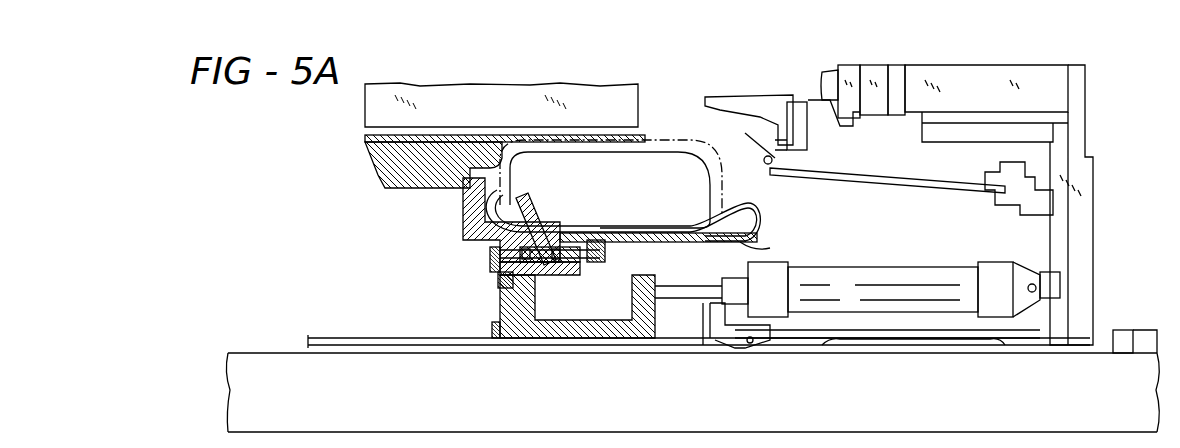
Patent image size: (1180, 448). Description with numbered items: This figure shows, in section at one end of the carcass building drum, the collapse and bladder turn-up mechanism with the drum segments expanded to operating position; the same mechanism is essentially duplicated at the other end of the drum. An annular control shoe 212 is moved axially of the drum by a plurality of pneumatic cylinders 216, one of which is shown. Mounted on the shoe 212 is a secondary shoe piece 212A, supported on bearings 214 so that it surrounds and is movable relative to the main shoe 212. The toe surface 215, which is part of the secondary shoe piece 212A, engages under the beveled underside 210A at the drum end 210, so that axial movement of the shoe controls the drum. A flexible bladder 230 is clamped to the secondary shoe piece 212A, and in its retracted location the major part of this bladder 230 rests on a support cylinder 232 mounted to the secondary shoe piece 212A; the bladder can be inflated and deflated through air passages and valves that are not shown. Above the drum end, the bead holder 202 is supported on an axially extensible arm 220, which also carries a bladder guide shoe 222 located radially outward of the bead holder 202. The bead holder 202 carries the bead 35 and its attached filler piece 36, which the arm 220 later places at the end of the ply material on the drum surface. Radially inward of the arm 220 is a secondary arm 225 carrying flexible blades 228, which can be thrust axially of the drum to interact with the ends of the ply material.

The bead holder ring 202 is at (1050, 215).
The drum end 210 is at (385, 175).
The beveled underside 210A is at (462, 190).
The annular control shoe 212 is at (505, 322).
The secondary shoe piece 212A is at (490, 268).
The bearings 214 is at (600, 265).
The toe surface 215 is at (470, 232).
The pneumatic cylinder 216 is at (895, 295).
The axially extensible arm 220 is at (950, 75).
The bladder guide shoe 222 is at (752, 100).
The secondary arm 225 is at (1015, 210).
The flexible blades 228 is at (875, 185).
The flexible bladder 230 is at (662, 138).
The support cylinder 232 is at (765, 242).
The bead 35 is at (768, 166).
The filler piece 36 is at (745, 134).